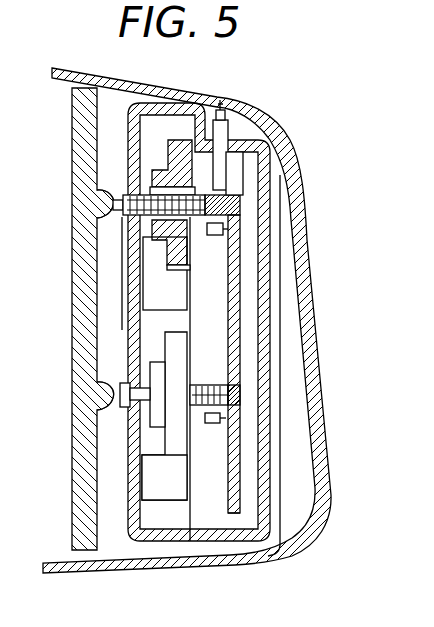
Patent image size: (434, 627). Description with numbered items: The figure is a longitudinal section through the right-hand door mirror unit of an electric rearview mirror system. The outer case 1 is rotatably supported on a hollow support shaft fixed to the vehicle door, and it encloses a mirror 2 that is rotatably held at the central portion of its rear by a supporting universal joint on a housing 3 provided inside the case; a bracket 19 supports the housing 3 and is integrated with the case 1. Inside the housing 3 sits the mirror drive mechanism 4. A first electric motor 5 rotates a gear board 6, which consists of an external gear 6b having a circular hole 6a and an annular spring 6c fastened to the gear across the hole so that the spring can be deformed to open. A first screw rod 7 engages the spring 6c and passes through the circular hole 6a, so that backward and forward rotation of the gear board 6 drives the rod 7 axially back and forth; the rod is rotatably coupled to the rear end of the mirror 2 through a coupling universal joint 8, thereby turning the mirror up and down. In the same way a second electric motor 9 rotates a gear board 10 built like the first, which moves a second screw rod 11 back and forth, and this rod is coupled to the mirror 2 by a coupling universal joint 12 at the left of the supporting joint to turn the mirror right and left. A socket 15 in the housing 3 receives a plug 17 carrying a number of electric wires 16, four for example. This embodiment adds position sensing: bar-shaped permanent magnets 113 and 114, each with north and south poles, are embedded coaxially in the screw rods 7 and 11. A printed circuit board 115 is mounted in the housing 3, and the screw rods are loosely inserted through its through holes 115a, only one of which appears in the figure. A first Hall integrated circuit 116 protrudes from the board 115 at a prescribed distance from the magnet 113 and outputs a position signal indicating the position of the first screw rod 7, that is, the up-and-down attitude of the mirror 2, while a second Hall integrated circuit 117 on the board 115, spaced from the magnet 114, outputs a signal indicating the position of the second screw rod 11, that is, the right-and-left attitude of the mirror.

The case 1 is at (312, 334).
The mirror 2 is at (80, 466).
The housing 3 is at (167, 556).
The mirror drive mechanism 4 is at (150, 516).
The first electric motor 5 is at (152, 312).
The gear board 6 is at (180, 258).
The circular hole 6a is at (140, 190).
The external gear 6b is at (172, 270).
The annular spring 6c is at (203, 194).
The first screw rod 7 is at (122, 222).
The coupling universal joint 8 is at (108, 222).
The second electric motor 9 is at (152, 482).
The gear board 10 is at (192, 456).
The second screw rod 11 is at (124, 407).
The coupling universal joint 12 is at (110, 382).
The socket 15 is at (228, 135).
The electric wires 16 is at (220, 99).
The plug 17 is at (228, 118).
The bracket 19 is at (282, 483).
The permanent magnet 113 is at (240, 200).
The permanent magnet 114 is at (217, 384).
The printed circuit board 115 is at (228, 510).
The through hole 115a is at (240, 218).
The first Hall integrated circuit 116 is at (215, 236).
The second Hall integrated circuit 117 is at (211, 424).